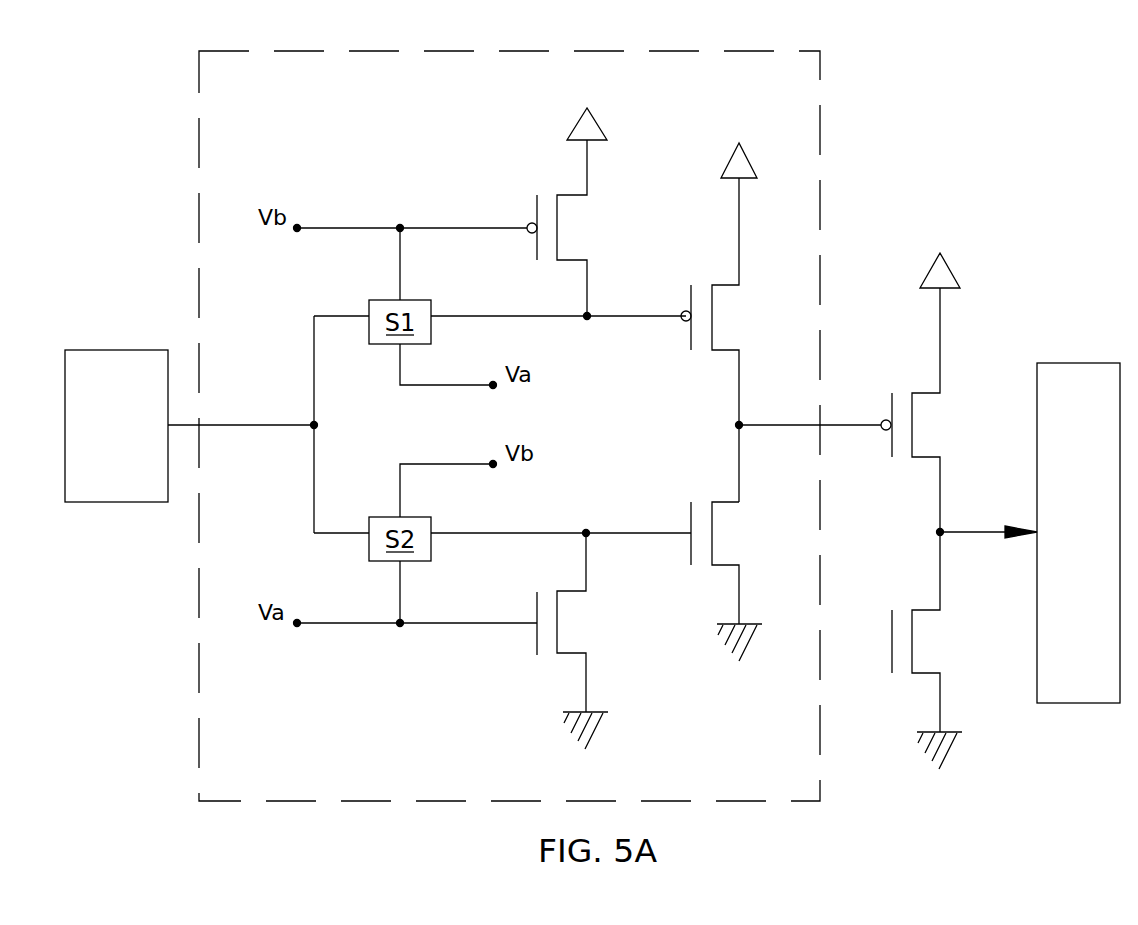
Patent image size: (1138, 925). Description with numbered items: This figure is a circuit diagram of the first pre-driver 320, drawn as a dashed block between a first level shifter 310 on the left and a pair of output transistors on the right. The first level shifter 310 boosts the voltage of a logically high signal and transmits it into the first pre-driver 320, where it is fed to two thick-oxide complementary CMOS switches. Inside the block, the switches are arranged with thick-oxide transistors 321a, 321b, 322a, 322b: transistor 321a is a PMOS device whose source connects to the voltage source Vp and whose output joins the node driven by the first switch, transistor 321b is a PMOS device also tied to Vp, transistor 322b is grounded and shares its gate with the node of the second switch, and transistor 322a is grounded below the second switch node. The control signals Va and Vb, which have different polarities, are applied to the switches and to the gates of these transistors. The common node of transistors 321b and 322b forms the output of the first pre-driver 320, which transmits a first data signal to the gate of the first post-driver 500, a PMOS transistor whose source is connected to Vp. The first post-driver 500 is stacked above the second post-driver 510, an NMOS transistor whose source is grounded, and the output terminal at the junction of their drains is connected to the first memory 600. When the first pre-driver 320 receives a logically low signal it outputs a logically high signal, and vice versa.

The first level shifter 310 is at (98, 480).
The first pre-driver 320 is at (800, 51).
The first PMOS transistor 321a is at (583, 193).
The second PMOS transistor 321b is at (738, 305).
The thick-oxide PMOS transistor 322a is at (588, 641).
The thick-oxide PMOS transistor 322b is at (743, 581).
The first post-driver 500 is at (931, 377).
The second post-driver 510 is at (937, 650).
The first memory 600 is at (1059, 577).